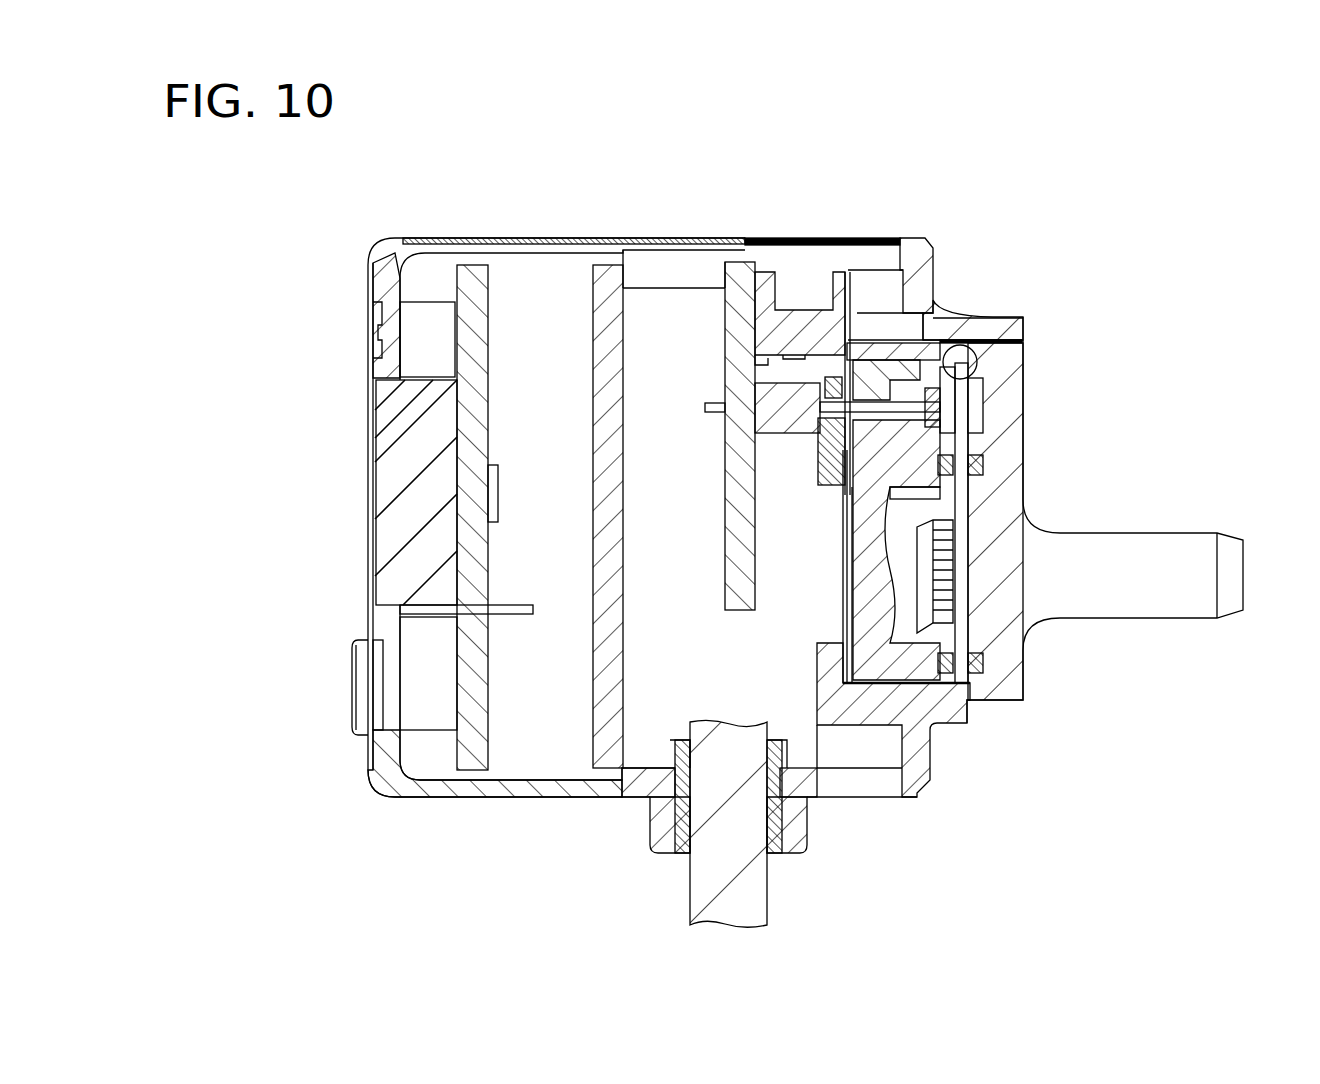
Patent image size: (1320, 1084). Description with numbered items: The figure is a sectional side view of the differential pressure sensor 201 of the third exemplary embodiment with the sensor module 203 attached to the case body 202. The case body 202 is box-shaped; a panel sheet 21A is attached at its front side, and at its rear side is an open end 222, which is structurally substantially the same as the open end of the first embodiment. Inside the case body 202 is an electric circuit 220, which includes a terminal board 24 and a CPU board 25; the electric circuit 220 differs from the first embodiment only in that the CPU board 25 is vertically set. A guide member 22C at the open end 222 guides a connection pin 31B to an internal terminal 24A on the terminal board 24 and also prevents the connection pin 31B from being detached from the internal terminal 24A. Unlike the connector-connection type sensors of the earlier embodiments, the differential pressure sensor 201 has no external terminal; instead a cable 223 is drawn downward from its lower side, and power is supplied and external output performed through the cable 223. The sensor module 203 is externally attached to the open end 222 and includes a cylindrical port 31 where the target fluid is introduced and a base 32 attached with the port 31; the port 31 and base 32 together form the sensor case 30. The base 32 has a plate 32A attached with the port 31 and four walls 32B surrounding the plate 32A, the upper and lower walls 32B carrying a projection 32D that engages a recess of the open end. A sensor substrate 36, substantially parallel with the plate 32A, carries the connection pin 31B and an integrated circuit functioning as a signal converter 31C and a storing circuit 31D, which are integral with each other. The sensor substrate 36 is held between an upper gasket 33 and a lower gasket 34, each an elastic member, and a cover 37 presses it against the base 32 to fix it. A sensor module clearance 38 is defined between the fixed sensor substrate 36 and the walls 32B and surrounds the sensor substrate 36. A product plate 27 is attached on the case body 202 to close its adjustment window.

The differential pressure sensor 201 is at (800, 140).
The case body 202 is at (537, 175).
The sensor module 203 is at (1140, 405).
The panel sheet 21A is at (368, 517).
The guide member 22C is at (830, 383).
The electric circuit 220 is at (660, 305).
The open end 222 is at (978, 355).
The cable 223 is at (690, 888).
The terminal board 24 is at (725, 525).
The internal terminal 24A is at (790, 383).
The CPU board 25 is at (593, 473).
The product plate 27 is at (575, 238).
The sensor case 30 is at (1128, 768).
The port 31 is at (1193, 618).
The connection pin 31B is at (985, 425).
The signal converter 31C is at (900, 640).
The storing circuit 31D is at (905, 758).
The base 32 is at (1100, 700).
The plate 32A is at (1025, 690).
The walls 32B is at (990, 340).
The projection 32D is at (920, 320).
The upper gasket 33 is at (985, 483).
The lower gasket 34 is at (985, 452).
The sensor substrate 36 is at (962, 622).
The cover 37 is at (870, 668).
The sensor module clearance 38 is at (968, 372).